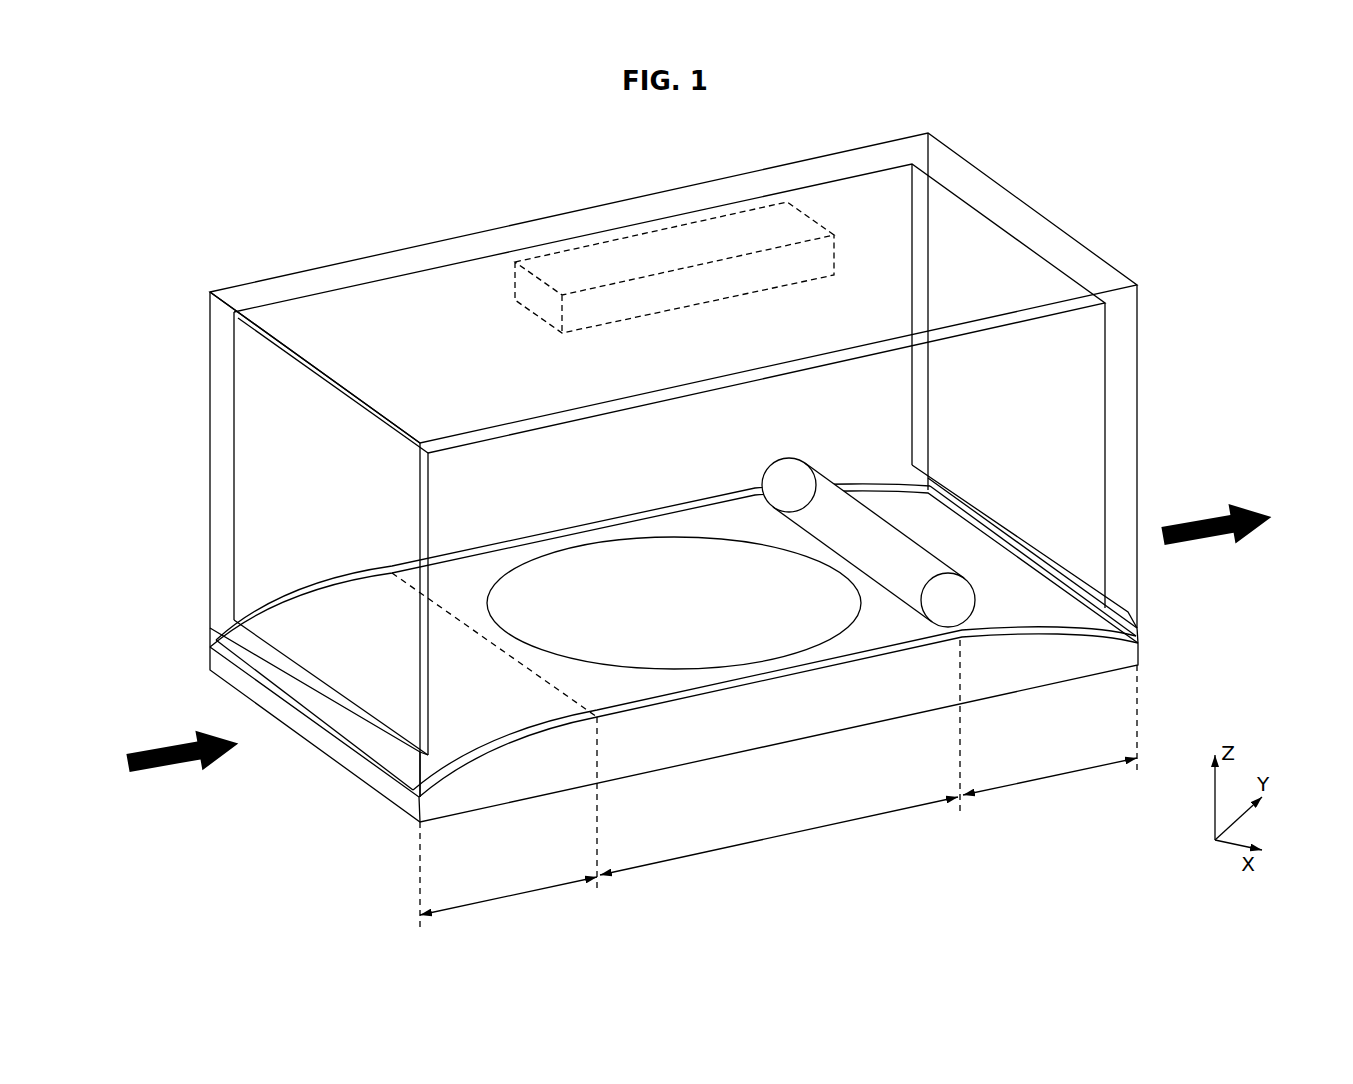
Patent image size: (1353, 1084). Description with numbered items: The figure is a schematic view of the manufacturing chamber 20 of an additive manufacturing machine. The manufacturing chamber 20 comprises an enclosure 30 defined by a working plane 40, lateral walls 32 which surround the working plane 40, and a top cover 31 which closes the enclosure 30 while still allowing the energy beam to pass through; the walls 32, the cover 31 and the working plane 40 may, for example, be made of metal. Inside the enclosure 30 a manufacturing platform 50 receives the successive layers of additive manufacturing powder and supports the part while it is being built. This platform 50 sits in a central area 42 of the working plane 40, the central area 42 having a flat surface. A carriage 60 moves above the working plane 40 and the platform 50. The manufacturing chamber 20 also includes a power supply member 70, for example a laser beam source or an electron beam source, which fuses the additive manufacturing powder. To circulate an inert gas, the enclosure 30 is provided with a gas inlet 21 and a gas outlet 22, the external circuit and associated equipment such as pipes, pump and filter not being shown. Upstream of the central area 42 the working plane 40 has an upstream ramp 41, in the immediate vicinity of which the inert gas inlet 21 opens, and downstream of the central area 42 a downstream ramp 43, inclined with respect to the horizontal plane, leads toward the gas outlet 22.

The manufacturing chamber 20 is at (342, 198).
The gas inlet 21 is at (434, 780).
The gas outlet 22 is at (1126, 620).
The enclosure 30 is at (672, 465).
The top cover 31 is at (977, 330).
The lateral walls 32 is at (218, 384).
The working plane 40 is at (784, 721).
The upstream ramp 41 is at (508, 824).
The central area 42 is at (780, 757).
The downstream ramp 43 is at (1050, 730).
The manufacturing platform 50 is at (659, 616).
The carriage 60 is at (843, 547).
The power supply member 70 is at (654, 262).